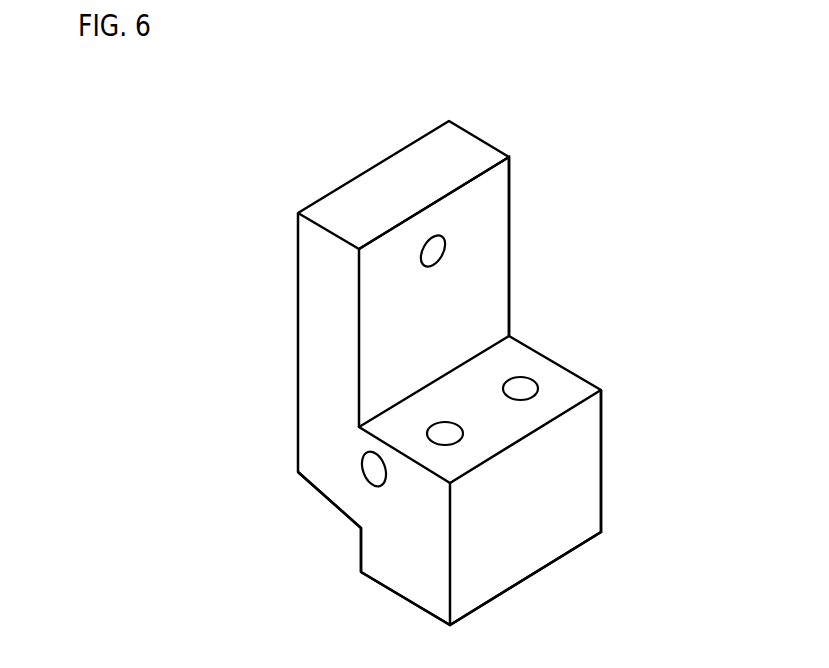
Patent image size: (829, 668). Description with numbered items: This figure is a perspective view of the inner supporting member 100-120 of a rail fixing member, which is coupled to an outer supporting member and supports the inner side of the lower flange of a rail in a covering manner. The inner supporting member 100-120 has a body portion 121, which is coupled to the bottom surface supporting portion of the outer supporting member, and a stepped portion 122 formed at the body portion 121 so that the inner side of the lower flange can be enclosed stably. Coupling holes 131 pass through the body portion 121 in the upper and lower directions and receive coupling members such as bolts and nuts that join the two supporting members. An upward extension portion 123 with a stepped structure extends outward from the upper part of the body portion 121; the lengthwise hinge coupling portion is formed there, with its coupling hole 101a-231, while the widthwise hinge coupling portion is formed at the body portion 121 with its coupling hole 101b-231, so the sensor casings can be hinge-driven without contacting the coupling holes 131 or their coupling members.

The inner supporting member of rail fixing member 100-120 is at (298, 122).
The body portion 121 is at (579, 457).
The stepped portion 122 is at (323, 518).
The upward extension portion 123 is at (487, 194).
The coupling holes 131 is at (533, 376).
The coupling hole of lengthwise hinge coupling portion 101a-231 is at (455, 242).
The coupling hole of widthwise hinge coupling portion 101b-231 is at (353, 470).